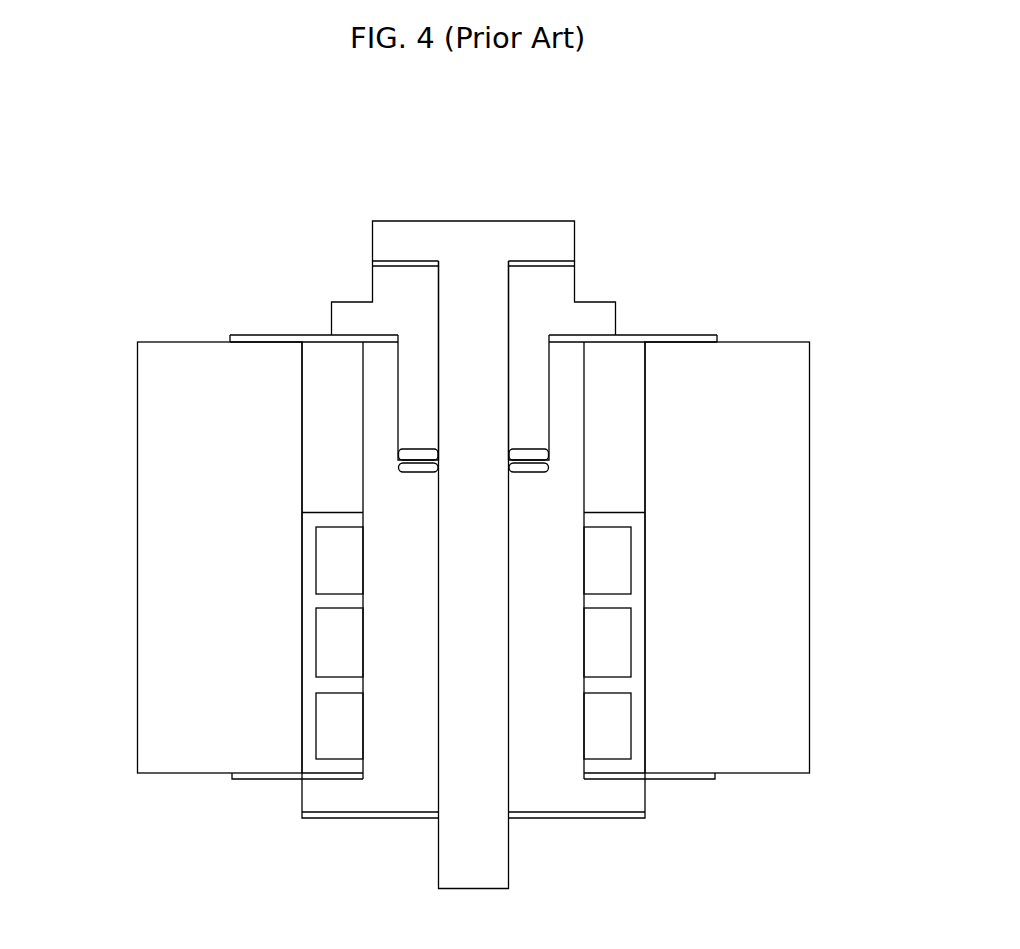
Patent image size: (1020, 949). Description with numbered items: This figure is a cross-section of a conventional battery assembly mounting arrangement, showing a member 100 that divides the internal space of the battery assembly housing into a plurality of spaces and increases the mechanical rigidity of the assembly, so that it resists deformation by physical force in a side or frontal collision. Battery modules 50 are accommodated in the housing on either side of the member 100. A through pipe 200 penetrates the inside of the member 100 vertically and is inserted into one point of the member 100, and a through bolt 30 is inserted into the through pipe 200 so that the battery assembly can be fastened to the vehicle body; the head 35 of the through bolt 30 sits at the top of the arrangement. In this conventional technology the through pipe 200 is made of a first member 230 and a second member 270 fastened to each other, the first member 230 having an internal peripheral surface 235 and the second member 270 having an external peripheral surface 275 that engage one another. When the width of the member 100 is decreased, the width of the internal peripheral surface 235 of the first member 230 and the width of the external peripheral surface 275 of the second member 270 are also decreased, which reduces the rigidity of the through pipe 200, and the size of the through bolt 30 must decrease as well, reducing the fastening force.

The through bolt 30 is at (560, 230).
The head 35 is at (420, 245).
The second member 270 is at (560, 302).
The external peripheral surface 275 is at (422, 449).
The internal peripheral surface 235 is at (420, 472).
The first member 230 is at (402, 792).
The battery modules 50 is at (155, 595).
The member 100 is at (637, 753).
The through pipe 200 is at (537, 836).